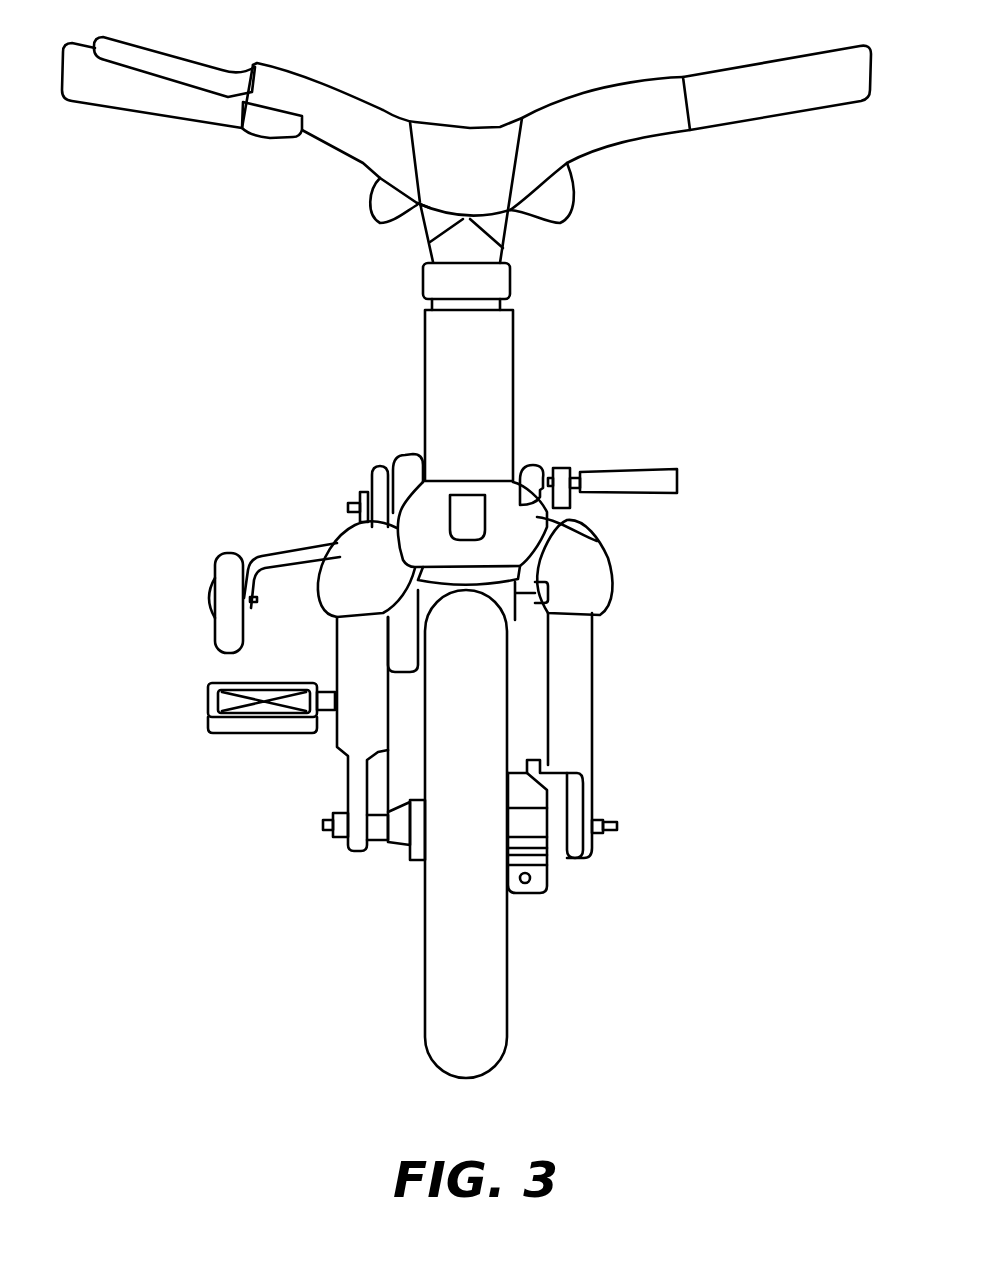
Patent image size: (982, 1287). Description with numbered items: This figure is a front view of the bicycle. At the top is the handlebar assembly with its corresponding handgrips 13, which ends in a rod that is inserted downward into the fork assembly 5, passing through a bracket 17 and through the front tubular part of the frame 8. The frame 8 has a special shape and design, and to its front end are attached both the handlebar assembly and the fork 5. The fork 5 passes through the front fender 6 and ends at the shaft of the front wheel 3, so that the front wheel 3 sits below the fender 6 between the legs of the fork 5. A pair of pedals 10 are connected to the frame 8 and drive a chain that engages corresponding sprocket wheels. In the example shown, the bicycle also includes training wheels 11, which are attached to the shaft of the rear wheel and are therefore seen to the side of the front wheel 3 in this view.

The front wheel 3 is at (507, 957).
The fork 5 is at (593, 678).
The front fender 6 is at (597, 541).
The frame 8 is at (513, 383).
The pedals 10 is at (260, 732).
The training wheels 11 is at (213, 565).
The handgrips 13 is at (383, 110).
The bracket 17 is at (510, 284).